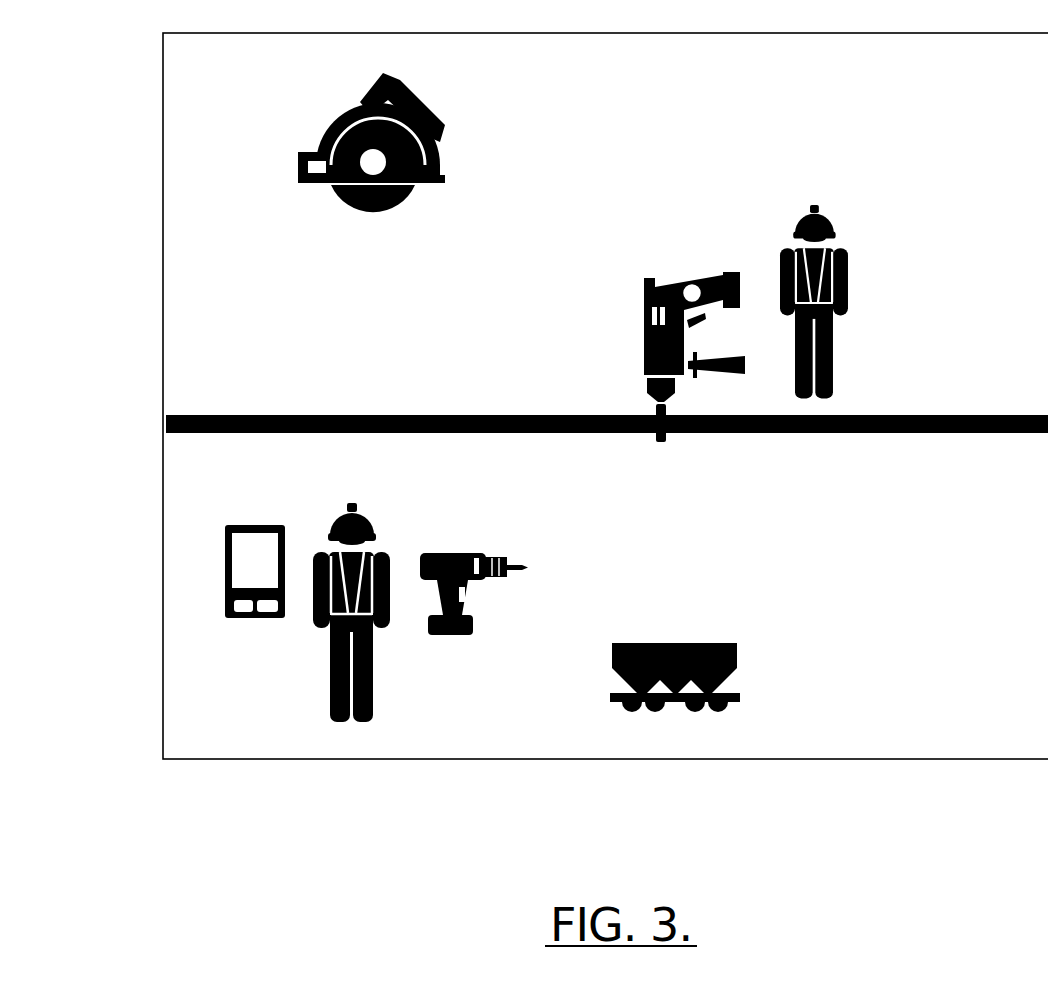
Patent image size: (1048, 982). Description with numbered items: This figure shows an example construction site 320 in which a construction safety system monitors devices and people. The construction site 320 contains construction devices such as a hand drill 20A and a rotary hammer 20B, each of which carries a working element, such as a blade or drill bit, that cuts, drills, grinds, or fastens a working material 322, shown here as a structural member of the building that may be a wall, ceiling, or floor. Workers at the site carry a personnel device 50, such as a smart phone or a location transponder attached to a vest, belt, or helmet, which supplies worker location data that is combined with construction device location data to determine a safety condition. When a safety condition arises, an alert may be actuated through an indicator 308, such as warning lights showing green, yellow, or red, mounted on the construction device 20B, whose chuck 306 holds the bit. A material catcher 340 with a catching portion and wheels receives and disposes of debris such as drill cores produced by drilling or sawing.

The construction site 320 is at (162, 397).
The working material 322 is at (998, 433).
The personnel device 50 is at (248, 523).
The construction device 20A is at (462, 553).
The construction device 20B is at (658, 316).
The chuck 306 is at (648, 390).
The indicator 308 is at (688, 285).
The material catcher 340 is at (736, 643).